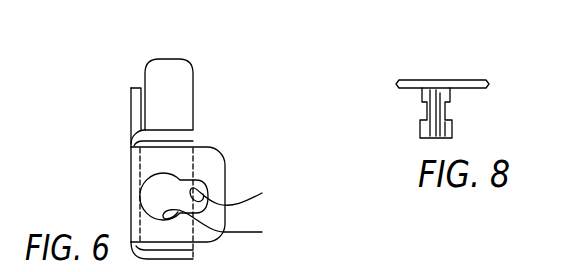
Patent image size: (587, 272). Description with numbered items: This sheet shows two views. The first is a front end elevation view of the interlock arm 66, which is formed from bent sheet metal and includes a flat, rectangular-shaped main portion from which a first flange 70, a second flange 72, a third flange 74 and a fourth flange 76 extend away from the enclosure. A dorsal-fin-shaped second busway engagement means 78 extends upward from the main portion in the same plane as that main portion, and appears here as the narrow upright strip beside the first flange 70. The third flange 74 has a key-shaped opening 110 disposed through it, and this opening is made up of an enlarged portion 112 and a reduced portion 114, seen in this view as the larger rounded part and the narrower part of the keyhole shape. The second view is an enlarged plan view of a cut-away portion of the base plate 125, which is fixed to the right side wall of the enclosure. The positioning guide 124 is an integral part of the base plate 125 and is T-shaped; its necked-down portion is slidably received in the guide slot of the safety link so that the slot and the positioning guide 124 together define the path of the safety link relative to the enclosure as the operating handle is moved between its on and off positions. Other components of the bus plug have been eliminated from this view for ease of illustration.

In FIG. 6, the interlock arm 66 is at (221, 85).
In FIG. 6, the first flange 70 is at (187, 73).
In FIG. 6, the second flange 72 is at (195, 257).
In FIG. 6, the third flange 74 is at (220, 164).
In FIG. 6, the fourth flange 76 is at (188, 137).
In FIG. 6, the second busway engagement means 78 is at (133, 107).
In FIG. 6, the key-shaped opening 110 is at (242, 208).
In FIG. 6, the enlarged portion 112 is at (249, 226).
In FIG. 6, the reduced portion 114 is at (267, 192).
In FIG. 8, the positioning guide 124 is at (447, 131).
In FIG. 8, the base plate 125 is at (464, 80).